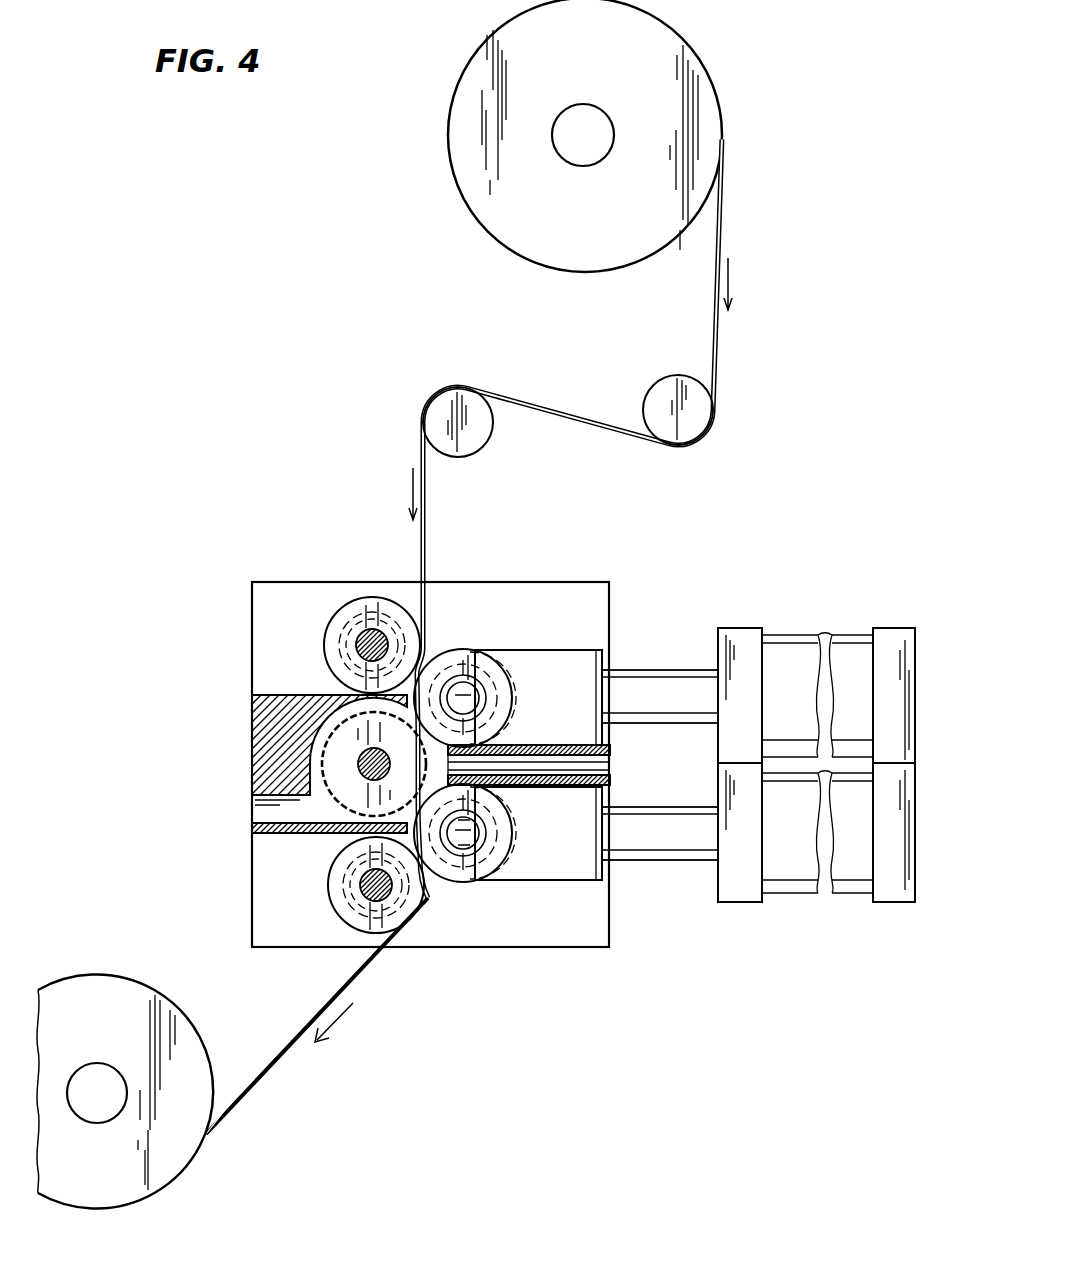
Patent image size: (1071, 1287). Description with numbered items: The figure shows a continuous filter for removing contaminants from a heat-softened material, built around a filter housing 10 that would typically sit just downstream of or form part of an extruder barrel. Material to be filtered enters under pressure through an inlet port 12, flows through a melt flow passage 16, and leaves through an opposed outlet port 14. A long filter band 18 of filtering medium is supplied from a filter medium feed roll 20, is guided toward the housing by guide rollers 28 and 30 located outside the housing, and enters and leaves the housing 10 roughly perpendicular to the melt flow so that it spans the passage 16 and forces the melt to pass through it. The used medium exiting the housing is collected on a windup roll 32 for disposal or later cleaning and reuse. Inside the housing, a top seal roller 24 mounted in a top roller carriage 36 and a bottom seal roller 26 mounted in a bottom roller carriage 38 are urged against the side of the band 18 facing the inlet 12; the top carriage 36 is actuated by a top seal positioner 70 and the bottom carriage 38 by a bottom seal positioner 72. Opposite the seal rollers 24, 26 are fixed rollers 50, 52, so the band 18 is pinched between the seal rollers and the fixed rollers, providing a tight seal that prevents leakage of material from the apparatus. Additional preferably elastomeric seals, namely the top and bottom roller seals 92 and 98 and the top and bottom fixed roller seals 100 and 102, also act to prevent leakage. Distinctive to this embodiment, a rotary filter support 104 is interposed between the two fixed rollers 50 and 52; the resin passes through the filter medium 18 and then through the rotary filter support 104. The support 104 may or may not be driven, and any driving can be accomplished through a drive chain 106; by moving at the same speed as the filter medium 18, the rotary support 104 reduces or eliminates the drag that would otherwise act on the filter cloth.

The filter housing 10 is at (601, 580).
The inlet port 12 is at (611, 753).
The outlet port 14 is at (263, 810).
The melt flow passage 16 is at (518, 786).
The filter band 18 is at (303, 1027).
The filter medium feed roll 20 is at (454, 175).
The top seal roller 24 is at (450, 655).
The bottom seal roller 26 is at (455, 872).
The guide roller 28 is at (424, 416).
The guide roller 30 is at (702, 416).
The windup roll 32 is at (160, 1178).
The top roller carriage 36 is at (547, 660).
The bottom roller carriage 38 is at (568, 865).
The fixed roller 50 is at (366, 598).
The fixed roller 52 is at (350, 892).
The top seal positioner 70 is at (802, 632).
The bottom seal positioner 72 is at (802, 898).
The top roller seal 92 is at (458, 752).
The bottom roller seal 98 is at (452, 778).
The top fixed roller seal 100 is at (405, 698).
The bottom fixed roller seal 102 is at (345, 835).
The rotary filter support 104 is at (323, 765).
The drive chain 106 is at (330, 713).